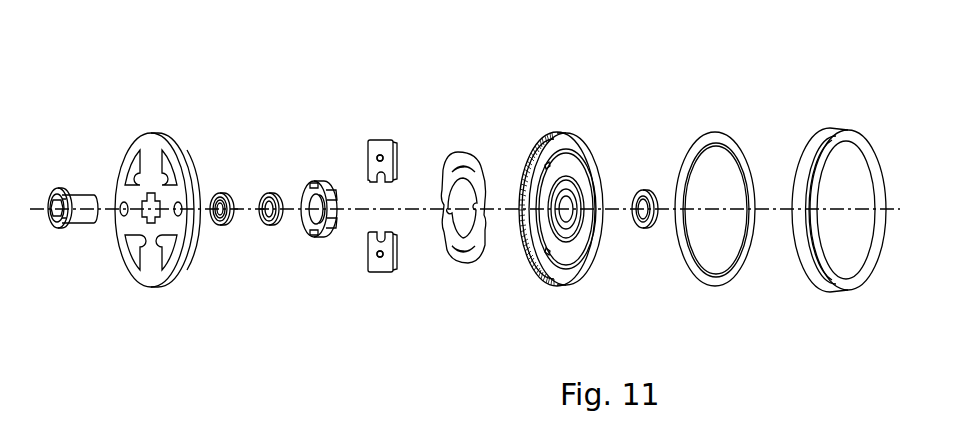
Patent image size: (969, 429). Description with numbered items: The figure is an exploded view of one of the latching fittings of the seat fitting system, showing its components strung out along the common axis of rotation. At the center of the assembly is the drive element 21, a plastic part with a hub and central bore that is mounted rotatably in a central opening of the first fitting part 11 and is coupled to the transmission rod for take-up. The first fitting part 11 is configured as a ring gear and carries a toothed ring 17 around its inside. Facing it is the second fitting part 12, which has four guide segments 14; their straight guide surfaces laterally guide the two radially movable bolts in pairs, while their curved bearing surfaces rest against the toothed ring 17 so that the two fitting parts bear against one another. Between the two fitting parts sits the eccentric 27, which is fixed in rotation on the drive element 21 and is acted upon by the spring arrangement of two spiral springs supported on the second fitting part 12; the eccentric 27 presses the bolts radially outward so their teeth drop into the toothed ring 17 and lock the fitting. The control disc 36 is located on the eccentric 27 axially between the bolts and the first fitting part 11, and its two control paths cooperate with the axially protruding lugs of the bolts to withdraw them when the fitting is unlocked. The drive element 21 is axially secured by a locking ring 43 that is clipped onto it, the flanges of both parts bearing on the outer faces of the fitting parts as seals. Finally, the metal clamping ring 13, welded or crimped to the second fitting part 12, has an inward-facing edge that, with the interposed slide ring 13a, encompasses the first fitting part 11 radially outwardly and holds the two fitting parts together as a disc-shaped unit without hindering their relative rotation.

The drive element 21 is at (87, 218).
The second fitting part 12 is at (150, 280).
The guide segments 14 is at (172, 248).
The eccentric 27 is at (325, 233).
The control disc 36 is at (463, 257).
The first fitting part 11 is at (558, 223).
The toothed ring 17 is at (530, 160).
The locking ring 43 is at (644, 228).
The slide ring 13a is at (725, 280).
The clamping ring 13 is at (852, 277).